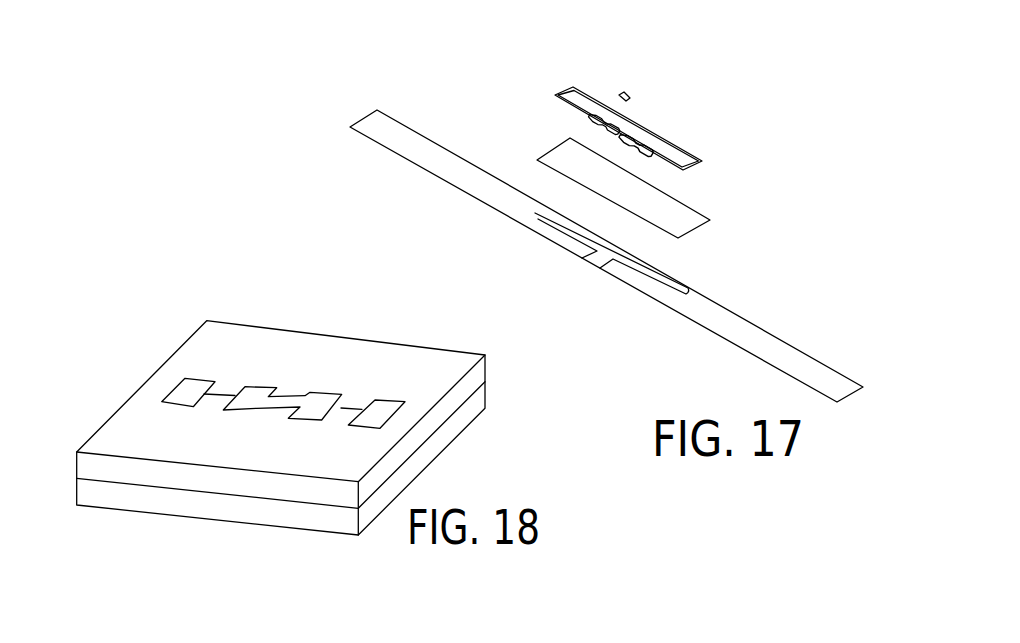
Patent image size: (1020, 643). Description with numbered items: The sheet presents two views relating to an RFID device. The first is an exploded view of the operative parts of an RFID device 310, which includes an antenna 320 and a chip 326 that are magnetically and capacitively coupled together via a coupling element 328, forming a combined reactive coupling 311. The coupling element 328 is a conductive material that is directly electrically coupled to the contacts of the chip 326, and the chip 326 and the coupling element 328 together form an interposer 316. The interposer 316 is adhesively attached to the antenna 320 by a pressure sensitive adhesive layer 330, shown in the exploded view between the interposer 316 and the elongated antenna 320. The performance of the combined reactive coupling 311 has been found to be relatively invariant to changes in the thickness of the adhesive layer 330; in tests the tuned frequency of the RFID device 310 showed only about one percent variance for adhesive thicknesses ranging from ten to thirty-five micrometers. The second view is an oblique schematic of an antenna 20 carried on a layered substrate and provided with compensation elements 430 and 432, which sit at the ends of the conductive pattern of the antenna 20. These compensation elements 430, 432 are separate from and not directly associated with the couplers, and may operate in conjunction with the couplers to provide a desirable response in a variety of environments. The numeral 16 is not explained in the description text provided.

In FIG. 17, the RFID device 310 is at (453, 55).
In FIG. 17, the combined reactive coupling 311 is at (757, 209).
In FIG. 17, the interposer 316 is at (643, 85).
In FIG. 17, the antenna 320 is at (362, 120).
In FIG. 17, the chip 326 is at (633, 93).
In FIG. 17, the coupling element 328 is at (687, 150).
In FIG. 17, the pressure sensitive adhesive layer 330 is at (551, 150).
In FIG. 18, the compensation element 430 is at (182, 388).
In FIG. 18, the compensation element 432 is at (381, 415).
In FIG. 18, the antenna 20 is at (255, 388).
In FIG. 18, the sensor substrate 16 is at (274, 414).